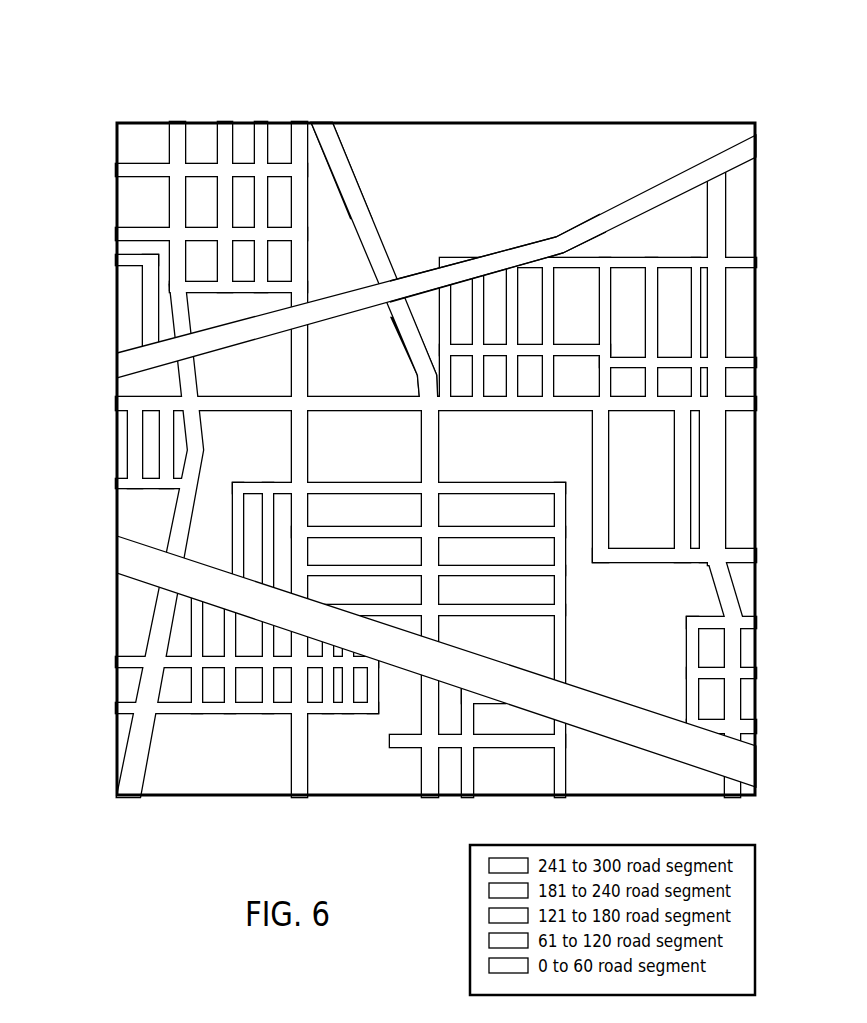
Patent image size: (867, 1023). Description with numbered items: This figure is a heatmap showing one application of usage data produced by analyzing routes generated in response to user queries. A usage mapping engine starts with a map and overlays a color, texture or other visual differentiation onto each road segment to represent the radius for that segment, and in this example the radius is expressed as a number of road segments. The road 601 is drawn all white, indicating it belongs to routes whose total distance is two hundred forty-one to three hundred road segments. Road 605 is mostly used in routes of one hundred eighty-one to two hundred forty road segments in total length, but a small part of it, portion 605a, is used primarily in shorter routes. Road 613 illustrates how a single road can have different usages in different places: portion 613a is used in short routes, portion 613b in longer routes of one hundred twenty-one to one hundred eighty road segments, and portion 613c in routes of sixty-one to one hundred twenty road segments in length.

The road 601 is at (138, 557).
The road 605 is at (137, 367).
The portion 605a is at (398, 280).
The road 613 is at (348, 192).
The portion 613a is at (335, 157).
The portion 613b is at (405, 331).
The portion 613c is at (427, 507).